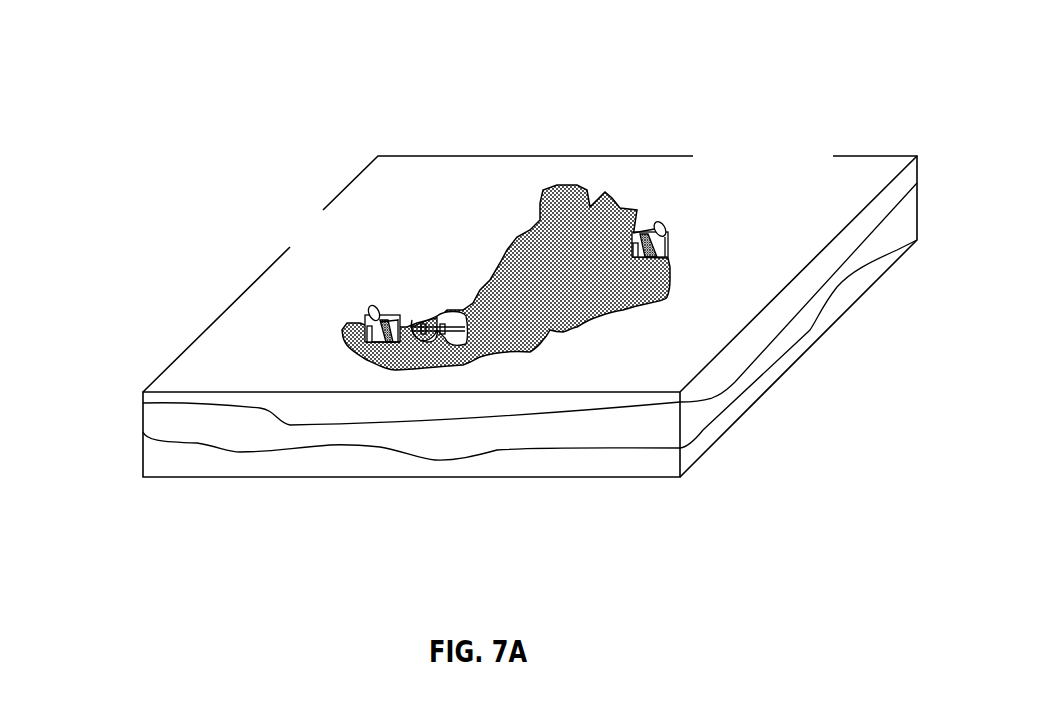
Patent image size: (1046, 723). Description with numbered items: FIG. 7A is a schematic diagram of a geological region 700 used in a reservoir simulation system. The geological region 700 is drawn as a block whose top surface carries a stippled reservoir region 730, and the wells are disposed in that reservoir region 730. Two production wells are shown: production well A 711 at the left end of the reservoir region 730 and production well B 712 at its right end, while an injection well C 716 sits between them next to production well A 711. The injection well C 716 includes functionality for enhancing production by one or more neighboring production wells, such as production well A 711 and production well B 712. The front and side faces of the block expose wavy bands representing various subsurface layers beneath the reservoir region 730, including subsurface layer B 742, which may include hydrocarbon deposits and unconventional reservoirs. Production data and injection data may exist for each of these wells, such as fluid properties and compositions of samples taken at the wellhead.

The geological region 700 is at (231, 101).
The production well A 711 is at (608, 498).
The production well 712 is at (663, 223).
The injection well C 716 is at (440, 317).
The reservoir region 730 is at (592, 195).
The subsurface layer B 742 is at (258, 460).